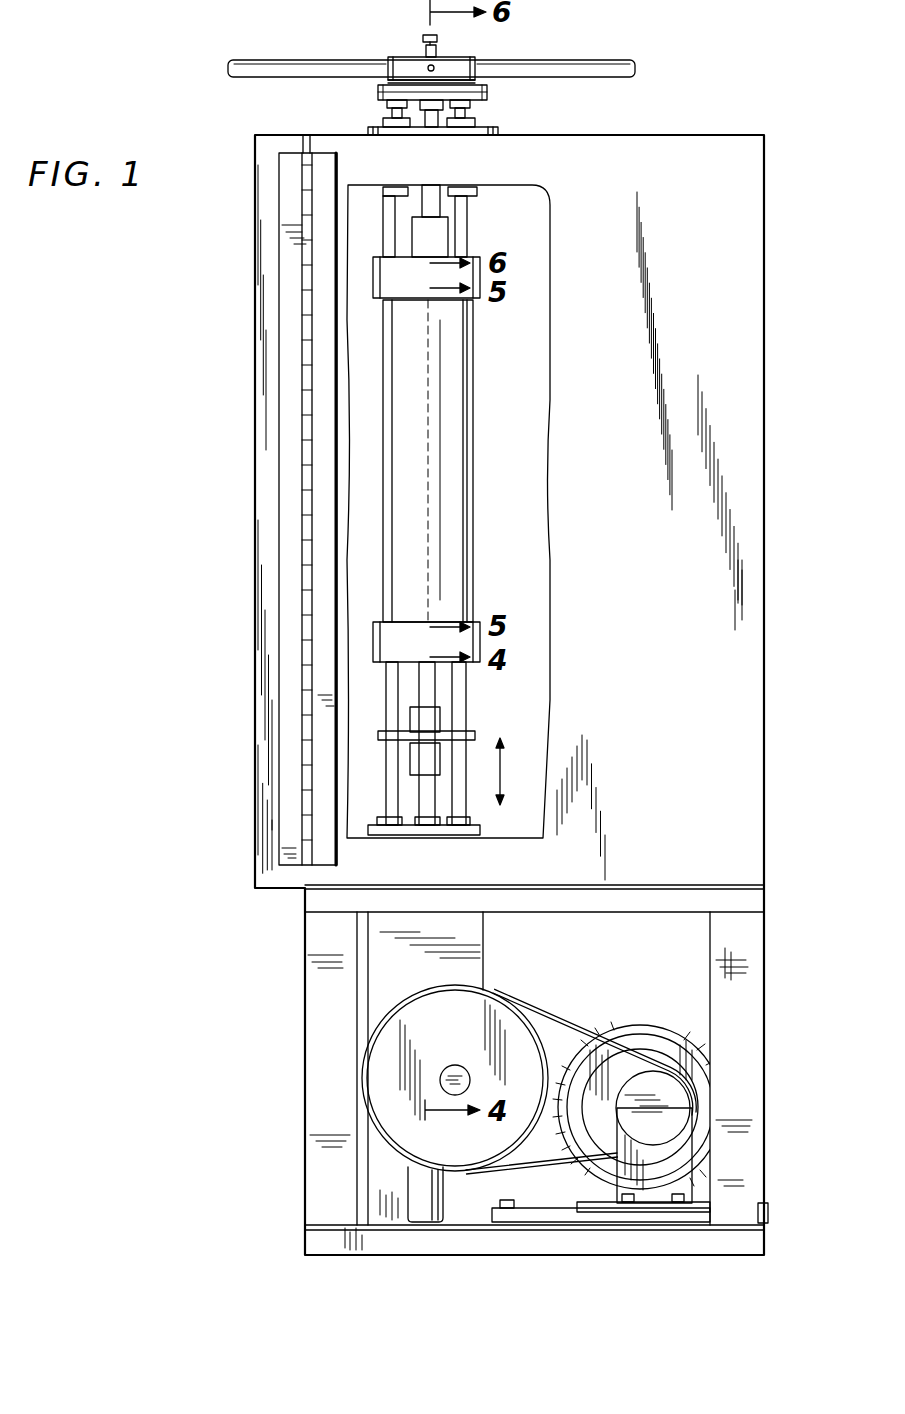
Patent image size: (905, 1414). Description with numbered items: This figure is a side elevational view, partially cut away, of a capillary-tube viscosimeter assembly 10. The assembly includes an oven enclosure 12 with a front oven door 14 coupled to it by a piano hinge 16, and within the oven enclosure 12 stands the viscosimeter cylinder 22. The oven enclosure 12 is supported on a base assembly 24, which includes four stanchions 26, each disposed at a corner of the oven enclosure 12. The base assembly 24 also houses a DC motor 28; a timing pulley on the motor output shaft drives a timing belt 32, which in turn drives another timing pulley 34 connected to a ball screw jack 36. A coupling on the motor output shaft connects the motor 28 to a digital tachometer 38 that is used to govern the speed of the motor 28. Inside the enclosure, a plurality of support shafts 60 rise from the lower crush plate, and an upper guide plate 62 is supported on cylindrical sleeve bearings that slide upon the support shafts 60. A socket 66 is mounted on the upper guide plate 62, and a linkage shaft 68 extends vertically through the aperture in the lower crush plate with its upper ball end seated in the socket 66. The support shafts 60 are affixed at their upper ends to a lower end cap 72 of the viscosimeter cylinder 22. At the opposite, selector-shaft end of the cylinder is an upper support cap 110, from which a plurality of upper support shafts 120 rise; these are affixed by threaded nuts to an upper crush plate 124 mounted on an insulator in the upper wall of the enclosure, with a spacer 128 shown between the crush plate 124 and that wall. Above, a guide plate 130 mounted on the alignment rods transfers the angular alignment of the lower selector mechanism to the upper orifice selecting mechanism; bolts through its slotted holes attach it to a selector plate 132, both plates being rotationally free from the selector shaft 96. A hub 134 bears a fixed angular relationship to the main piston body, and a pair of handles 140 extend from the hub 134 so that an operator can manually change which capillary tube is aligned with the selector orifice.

The viscosimeter assembly 10 is at (800, 675).
The oven enclosure 12 is at (750, 763).
The front oven door 14 is at (255, 634).
The piano hinge 16 is at (303, 683).
The viscosimeter cylinder 22 is at (468, 423).
The base assembly 24 is at (797, 1191).
The stanchions 26 is at (318, 1106).
The DC motor 28 is at (683, 1020).
The timing belt 32 is at (563, 1025).
The timing pulley 34 is at (487, 1007).
The ball screw jack 36 is at (484, 954).
The digital tachometer 38 is at (647, 1083).
The support shafts 60 is at (393, 757).
The upper guide plate 62 is at (475, 732).
The socket 66 is at (415, 767).
The linkage shaft 68 is at (420, 802).
The lower end cap 72 is at (372, 665).
The selector shaft 96 is at (430, 203).
The upper support cap 110 is at (377, 257).
The upper support shafts 120 is at (468, 217).
The upper crush plate 124 is at (373, 127).
The spacer 128 is at (497, 132).
The guide plate 130 is at (488, 92).
The selector plate 132 is at (380, 85).
The hub 134 is at (465, 60).
The handles 140 is at (600, 68).